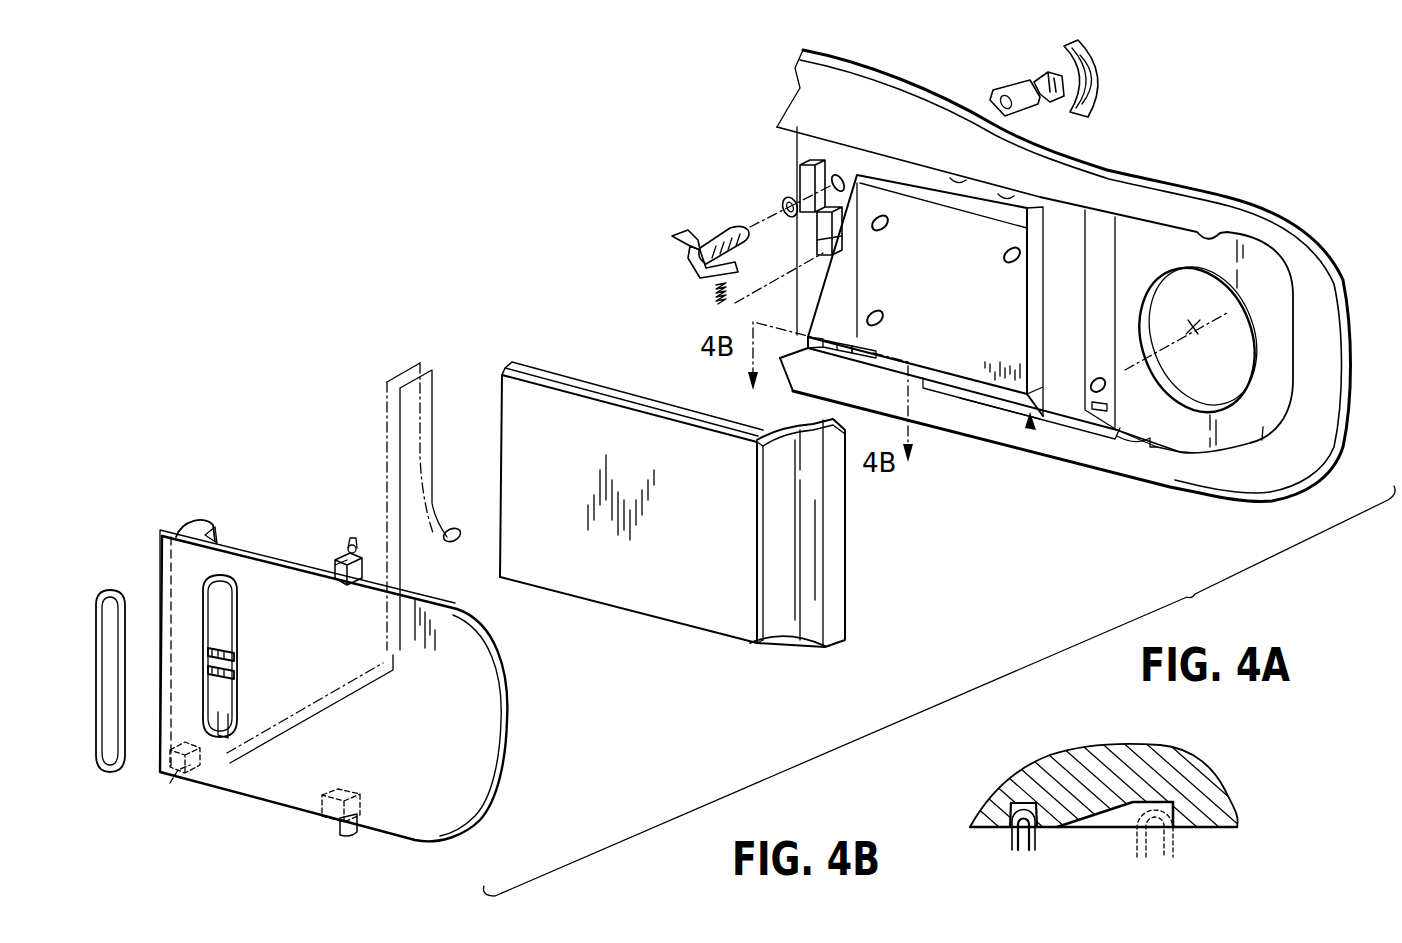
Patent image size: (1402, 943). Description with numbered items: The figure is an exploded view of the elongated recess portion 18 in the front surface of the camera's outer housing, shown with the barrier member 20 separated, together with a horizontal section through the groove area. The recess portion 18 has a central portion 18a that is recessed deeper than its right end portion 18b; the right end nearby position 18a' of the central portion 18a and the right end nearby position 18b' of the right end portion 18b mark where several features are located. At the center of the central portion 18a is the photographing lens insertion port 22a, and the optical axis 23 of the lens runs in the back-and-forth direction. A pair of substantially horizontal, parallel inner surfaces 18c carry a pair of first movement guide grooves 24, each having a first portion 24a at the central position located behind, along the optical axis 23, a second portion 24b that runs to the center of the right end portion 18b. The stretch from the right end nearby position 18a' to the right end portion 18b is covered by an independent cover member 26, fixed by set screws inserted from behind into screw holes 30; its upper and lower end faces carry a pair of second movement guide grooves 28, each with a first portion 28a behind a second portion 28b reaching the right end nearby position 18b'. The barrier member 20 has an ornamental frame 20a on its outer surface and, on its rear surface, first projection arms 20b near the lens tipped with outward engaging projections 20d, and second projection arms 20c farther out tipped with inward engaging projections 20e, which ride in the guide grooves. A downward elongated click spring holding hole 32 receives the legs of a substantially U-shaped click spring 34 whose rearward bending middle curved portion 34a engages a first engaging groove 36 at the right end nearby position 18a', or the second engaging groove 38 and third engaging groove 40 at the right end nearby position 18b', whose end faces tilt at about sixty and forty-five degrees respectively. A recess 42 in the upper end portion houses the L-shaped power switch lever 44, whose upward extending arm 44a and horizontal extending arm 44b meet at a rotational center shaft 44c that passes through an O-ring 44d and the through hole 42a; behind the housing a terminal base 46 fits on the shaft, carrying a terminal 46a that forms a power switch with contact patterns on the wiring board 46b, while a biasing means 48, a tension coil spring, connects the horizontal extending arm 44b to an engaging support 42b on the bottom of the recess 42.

In FIG. 4A, the recess portion 18 is at (1233, 427).
In FIG. 4A, the central portion 18a is at (1295, 480).
In FIG. 4A, the right end nearby position 18a' is at (1135, 331).
In FIG. 4A, the right end portion 18b is at (925, 269).
In FIG. 4A, the right end nearby position 18b' is at (917, 383).
In FIG. 4B, the right end nearby position 18b' is at (1094, 806).
In FIG. 4A, the inner surfaces 18c is at (1010, 195).
In FIG. 4A, the barrier member 20 is at (447, 770).
In FIG. 4A, the ornamental frame 20a is at (110, 598).
In FIG. 4A, the first projection arms 20b is at (340, 572).
In FIG. 4A, the second projection arms 20c is at (185, 528).
In FIG. 4A, the outward engaging projections 20d is at (352, 548).
In FIG. 4A, the inward engaging projections 20e is at (215, 535).
In FIG. 4A, the photographing lens insertion port 22a is at (1252, 375).
In FIG. 4A, the optical axis 23 is at (1196, 320).
In FIG. 4A, the first movement guide grooves 24 is at (1115, 182).
In FIG. 4A, the first portion 24a is at (1215, 222).
In FIG. 4A, the second portion 24b is at (958, 182).
In FIG. 4A, the independent cover member 26 is at (697, 625).
In FIG. 4A, the second movement guide grooves 28 is at (617, 375).
In FIG. 4A, the first portion 28a is at (832, 430).
In FIG. 4A, the second portion 28b is at (540, 360).
In FIG. 4A, the screw holes 30 is at (890, 226).
In FIG. 4A, the click spring holding hole 32 is at (238, 668).
In FIG. 4A, the click spring 34 is at (432, 485).
In FIG. 4A, the middle curved portion 34a is at (450, 541).
In FIG. 4B, the middle curved portion 34a is at (1005, 832).
In FIG. 4A, the first engaging groove 36 is at (1098, 415).
In FIG. 4A, the second engaging groove 38 is at (868, 352).
In FIG. 4B, the second engaging groove 38 is at (1120, 800).
In FIG. 4A, the third engaging groove 40 is at (830, 338).
In FIG. 4B, the third engaging groove 40 is at (1014, 802).
In FIG. 4A, the recess 42 is at (852, 162).
In FIG. 4A, the through hole 42a is at (836, 174).
In FIG. 4A, the engaging support 42b is at (847, 232).
In FIG. 4A, the power switch lever 44 is at (668, 250).
In FIG. 4A, the upward extending arm 44a is at (680, 232).
In FIG. 4A, the horizontal extending arm 44b is at (700, 268).
In FIG. 4A, the rotational center shaft 44c is at (718, 236).
In FIG. 4A, the O-ring 44d is at (782, 200).
In FIG. 4A, the terminal base 46 is at (1000, 90).
In FIG. 4A, the terminal 46a is at (1044, 78).
In FIG. 4A, the wiring board 46b is at (1106, 72).
In FIG. 4A, the biasing means 48 is at (714, 292).